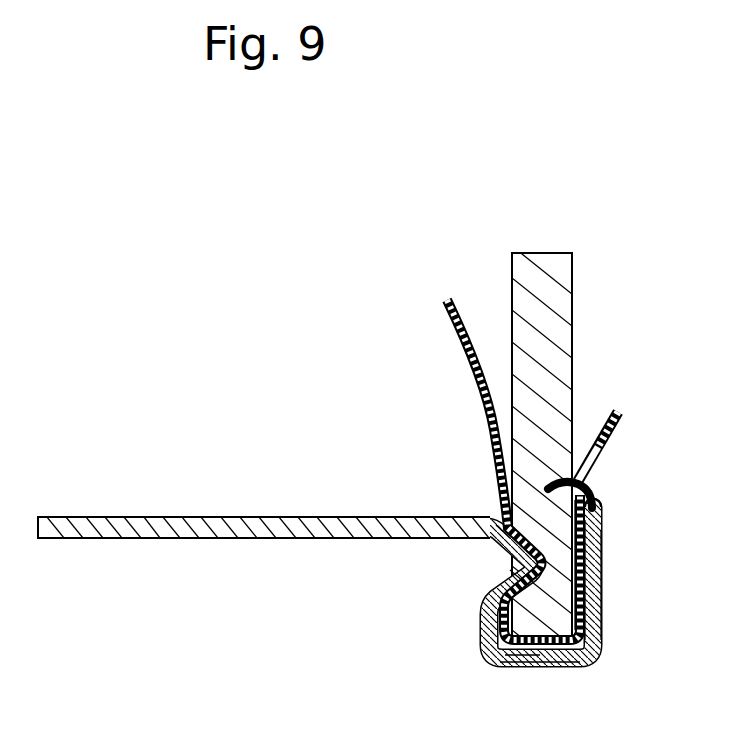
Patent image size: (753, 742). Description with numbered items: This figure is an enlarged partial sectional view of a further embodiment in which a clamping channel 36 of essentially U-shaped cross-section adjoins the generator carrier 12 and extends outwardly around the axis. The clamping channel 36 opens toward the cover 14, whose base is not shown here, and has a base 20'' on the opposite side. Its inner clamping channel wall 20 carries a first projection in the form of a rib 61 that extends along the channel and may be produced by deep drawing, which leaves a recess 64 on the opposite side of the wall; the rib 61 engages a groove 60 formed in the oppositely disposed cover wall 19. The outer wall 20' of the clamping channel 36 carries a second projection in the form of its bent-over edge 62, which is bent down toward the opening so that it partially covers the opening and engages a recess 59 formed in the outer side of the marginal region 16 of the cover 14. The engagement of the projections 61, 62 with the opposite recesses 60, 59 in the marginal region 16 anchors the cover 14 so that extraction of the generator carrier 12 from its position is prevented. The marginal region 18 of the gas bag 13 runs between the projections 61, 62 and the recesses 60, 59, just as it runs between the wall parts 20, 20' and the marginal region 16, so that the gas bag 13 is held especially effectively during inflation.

The generator carrier 12 is at (83, 515).
The gas bag 13 is at (445, 335).
The cover 14 is at (552, 250).
The marginal region of the cover 16 is at (592, 590).
The marginal region of the gas bag 18 is at (602, 456).
The cover wall 19 is at (510, 290).
The clamping channel wall 20 is at (510, 585).
The outer wall of the clamping channel 20' is at (640, 591).
The base of the clamping channel 20'' is at (553, 695).
The clamping channel 36 is at (520, 666).
The recess 59 is at (602, 527).
The groove 60 is at (540, 541).
The rib 61 is at (490, 553).
The bent-over edge 62 is at (598, 498).
The recess 64 is at (500, 573).